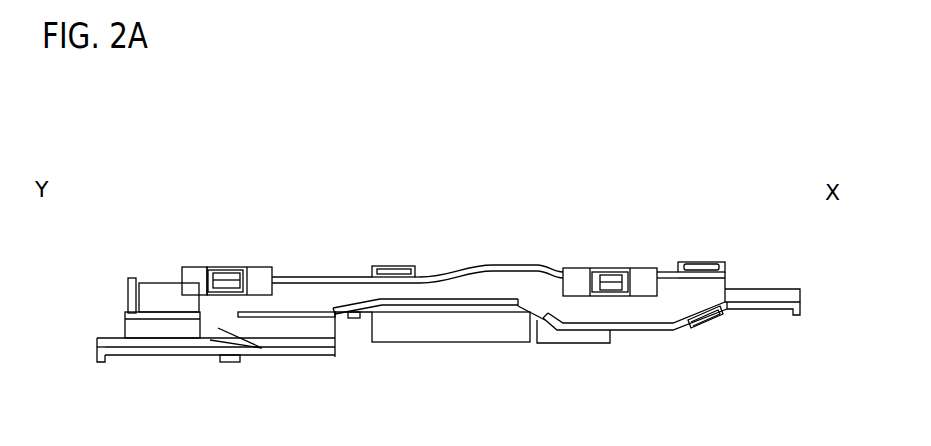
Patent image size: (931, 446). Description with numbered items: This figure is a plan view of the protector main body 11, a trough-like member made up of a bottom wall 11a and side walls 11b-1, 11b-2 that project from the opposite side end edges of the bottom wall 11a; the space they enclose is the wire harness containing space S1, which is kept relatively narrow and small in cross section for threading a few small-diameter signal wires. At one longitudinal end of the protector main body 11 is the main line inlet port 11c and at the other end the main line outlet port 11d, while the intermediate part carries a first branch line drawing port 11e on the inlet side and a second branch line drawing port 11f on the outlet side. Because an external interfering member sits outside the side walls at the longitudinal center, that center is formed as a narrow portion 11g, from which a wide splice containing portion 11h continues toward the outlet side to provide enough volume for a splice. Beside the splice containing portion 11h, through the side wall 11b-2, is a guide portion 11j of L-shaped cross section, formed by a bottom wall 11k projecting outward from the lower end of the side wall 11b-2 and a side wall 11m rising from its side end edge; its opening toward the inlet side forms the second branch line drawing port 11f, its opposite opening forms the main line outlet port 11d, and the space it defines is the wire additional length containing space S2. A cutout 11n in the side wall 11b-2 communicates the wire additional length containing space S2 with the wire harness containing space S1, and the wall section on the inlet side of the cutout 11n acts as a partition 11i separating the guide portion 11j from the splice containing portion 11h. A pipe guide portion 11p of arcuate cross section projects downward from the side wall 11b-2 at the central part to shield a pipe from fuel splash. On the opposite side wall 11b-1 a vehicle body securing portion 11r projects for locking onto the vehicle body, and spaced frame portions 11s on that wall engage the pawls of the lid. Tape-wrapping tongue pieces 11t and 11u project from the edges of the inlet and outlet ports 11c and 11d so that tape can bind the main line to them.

The protector main body 11 is at (140, 166).
The bottom wall 11a is at (502, 285).
The side wall 11b-1 is at (518, 265).
The side wall 11b-2 is at (485, 307).
The main line inlet port 11c is at (727, 289).
The main line outlet port 11d is at (124, 323).
The first branch line drawing port 11e is at (540, 338).
The second branch line drawing port 11f is at (338, 333).
The narrow portion 11g is at (420, 290).
The splice containing portion 11h is at (313, 300).
The partition 11i is at (293, 313).
The guide portion 11j is at (143, 358).
The bottom wall 11k is at (173, 332).
The side wall 11m is at (300, 360).
The cutout 11n is at (197, 292).
The pipe guide portion 11p is at (453, 328).
The vehicle body securing portion 11r is at (200, 267).
The frame portions 11s is at (685, 262).
The tape-wrapping tongue piece 11t is at (777, 305).
The tape-wrapping tongue piece 11u is at (98, 343).
The wire harness containing space S1 is at (462, 288).
The wire additional length containing space S2 is at (262, 348).